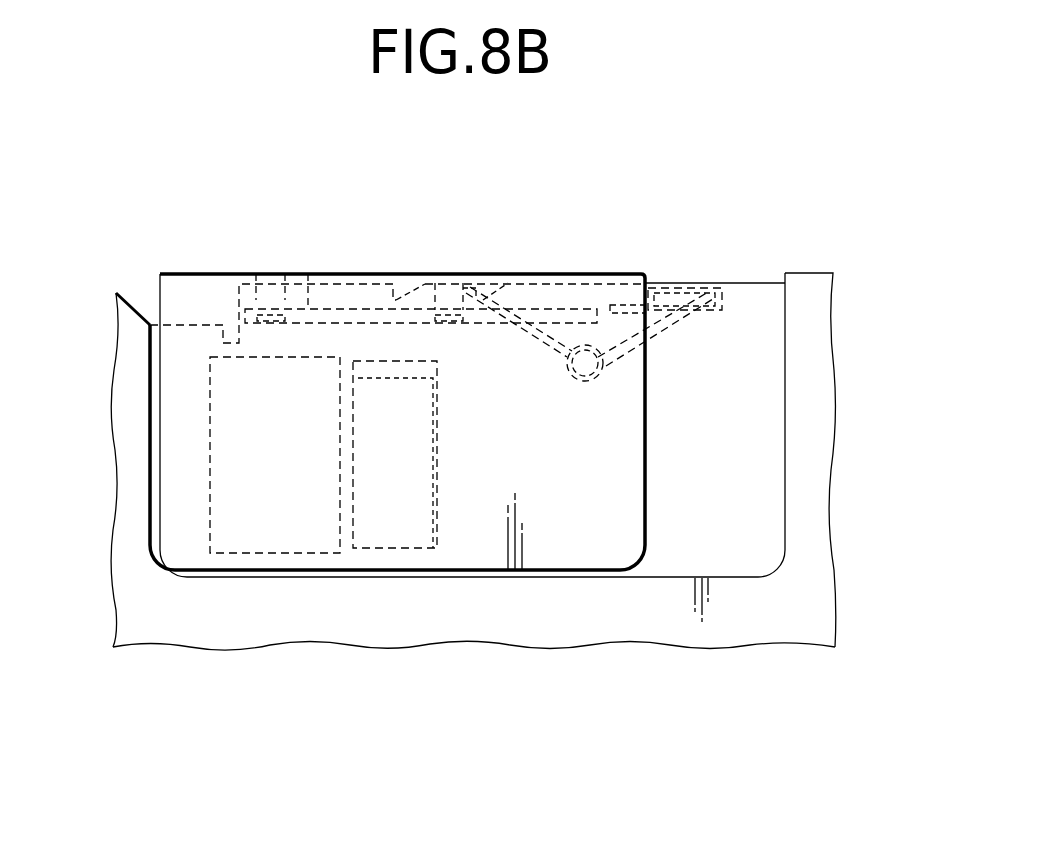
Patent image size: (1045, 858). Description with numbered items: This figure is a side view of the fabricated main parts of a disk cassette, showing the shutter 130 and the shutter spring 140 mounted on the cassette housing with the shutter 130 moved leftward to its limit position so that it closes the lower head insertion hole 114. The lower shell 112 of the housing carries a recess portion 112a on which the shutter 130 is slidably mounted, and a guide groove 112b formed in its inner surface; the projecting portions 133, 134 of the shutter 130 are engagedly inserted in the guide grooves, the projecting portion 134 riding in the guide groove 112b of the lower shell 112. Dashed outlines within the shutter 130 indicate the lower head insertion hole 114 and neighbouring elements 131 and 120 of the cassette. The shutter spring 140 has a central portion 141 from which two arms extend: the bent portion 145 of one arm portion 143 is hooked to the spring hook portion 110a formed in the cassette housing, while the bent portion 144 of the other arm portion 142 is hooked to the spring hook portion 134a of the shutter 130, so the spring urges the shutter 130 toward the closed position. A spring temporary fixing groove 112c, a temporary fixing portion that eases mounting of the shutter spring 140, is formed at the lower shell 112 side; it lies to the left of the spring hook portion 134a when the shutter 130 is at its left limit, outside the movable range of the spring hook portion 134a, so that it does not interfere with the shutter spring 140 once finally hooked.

The spring hook portion 110a is at (655, 283).
The lower shell 112 is at (816, 285).
The recess portion 112a is at (763, 287).
The guide groove 112b is at (310, 272).
The spring temporary fixing groove 112c is at (412, 290).
The lower head insertion hole 114 is at (364, 550).
The battery 120 is at (422, 535).
The shutter 130 is at (177, 274).
The cover recess 131 is at (255, 538).
The projecting portion 133 is at (280, 292).
The projecting portion 134 is at (439, 290).
The spring hook portion 134a is at (485, 298).
The shutter spring 140 is at (667, 384).
The pivot shaft 141 is at (588, 381).
The arm portion 142 is at (532, 340).
The arm portion 143 is at (672, 327).
The bent portion 144 is at (472, 292).
The bent portion 145 is at (712, 290).